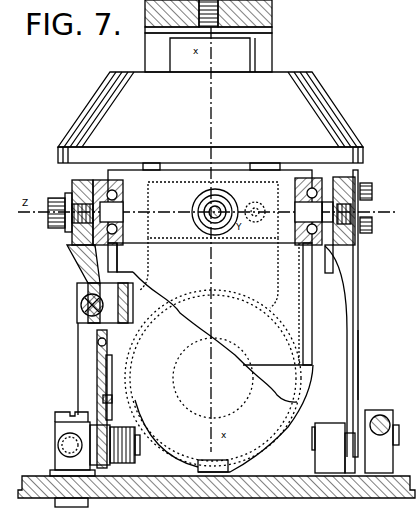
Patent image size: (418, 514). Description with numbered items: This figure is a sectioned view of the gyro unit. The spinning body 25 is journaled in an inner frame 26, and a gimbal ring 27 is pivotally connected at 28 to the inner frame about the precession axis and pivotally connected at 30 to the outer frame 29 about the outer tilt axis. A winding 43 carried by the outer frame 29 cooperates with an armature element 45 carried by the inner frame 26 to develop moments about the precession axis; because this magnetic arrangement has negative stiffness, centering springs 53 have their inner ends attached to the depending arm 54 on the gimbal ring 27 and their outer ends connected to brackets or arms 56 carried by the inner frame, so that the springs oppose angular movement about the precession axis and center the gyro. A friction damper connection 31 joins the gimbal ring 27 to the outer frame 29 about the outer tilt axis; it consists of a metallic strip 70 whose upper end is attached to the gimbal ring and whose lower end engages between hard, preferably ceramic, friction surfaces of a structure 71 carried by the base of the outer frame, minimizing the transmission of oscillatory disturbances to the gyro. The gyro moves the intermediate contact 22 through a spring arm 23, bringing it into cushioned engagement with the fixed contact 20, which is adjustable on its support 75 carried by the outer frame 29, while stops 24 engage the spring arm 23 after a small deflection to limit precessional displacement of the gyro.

The outer contact 20 is at (50, 433).
The intermediate contact 22 is at (64, 447).
The spring arm 23 is at (98, 372).
The stop 24 is at (97, 415).
The spinning body 25 is at (330, 110).
The inner frame 26 is at (257, 352).
The gimbal ring 27 is at (345, 176).
The pivotal connection 28 is at (100, 179).
The outer frame 29 is at (266, 50).
The pivotal connection 30 is at (224, 206).
The friction damper connection 31 is at (386, 376).
The winding 43 is at (246, 305).
The armature element 45 is at (170, 425).
The centering spring 53 is at (82, 312).
The depending arm 54 is at (85, 273).
The bracket 56 is at (78, 287).
The metallic strip 70 is at (360, 312).
The friction structure 71 is at (338, 430).
The support 75 is at (55, 420).